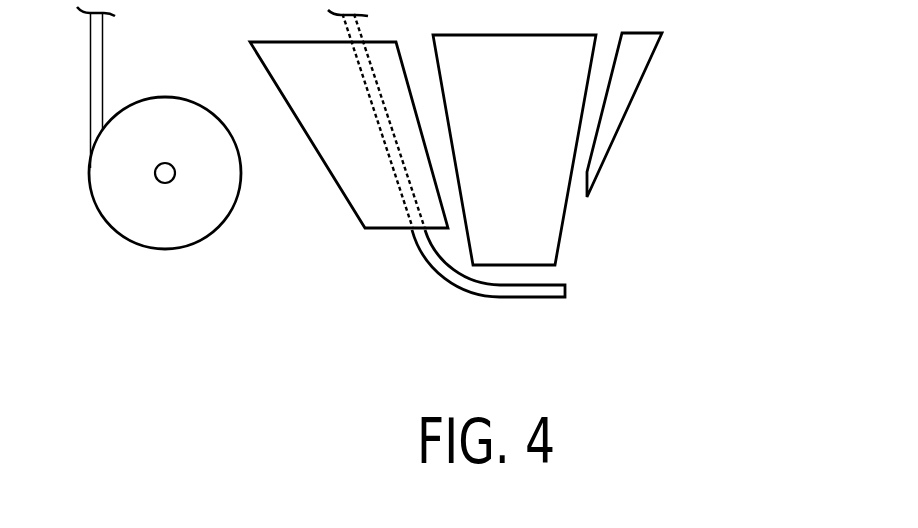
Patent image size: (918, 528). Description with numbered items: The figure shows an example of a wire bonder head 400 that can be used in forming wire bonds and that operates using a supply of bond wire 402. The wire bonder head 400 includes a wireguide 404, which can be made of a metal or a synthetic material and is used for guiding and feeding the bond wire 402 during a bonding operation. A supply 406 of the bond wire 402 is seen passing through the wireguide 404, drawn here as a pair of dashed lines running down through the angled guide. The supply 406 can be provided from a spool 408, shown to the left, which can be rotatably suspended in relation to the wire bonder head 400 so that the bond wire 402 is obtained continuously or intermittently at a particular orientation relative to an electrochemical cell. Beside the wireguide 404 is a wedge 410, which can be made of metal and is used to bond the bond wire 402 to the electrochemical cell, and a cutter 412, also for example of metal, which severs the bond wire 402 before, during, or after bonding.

The wire bonder head 400 is at (790, 25).
The bond wire 402 is at (443, 277).
The wireguide 404 is at (343, 200).
The supply of the bond wire 406 is at (368, 98).
The spool 408 is at (203, 213).
The wedge 410 is at (562, 231).
The cutter 412 is at (623, 120).